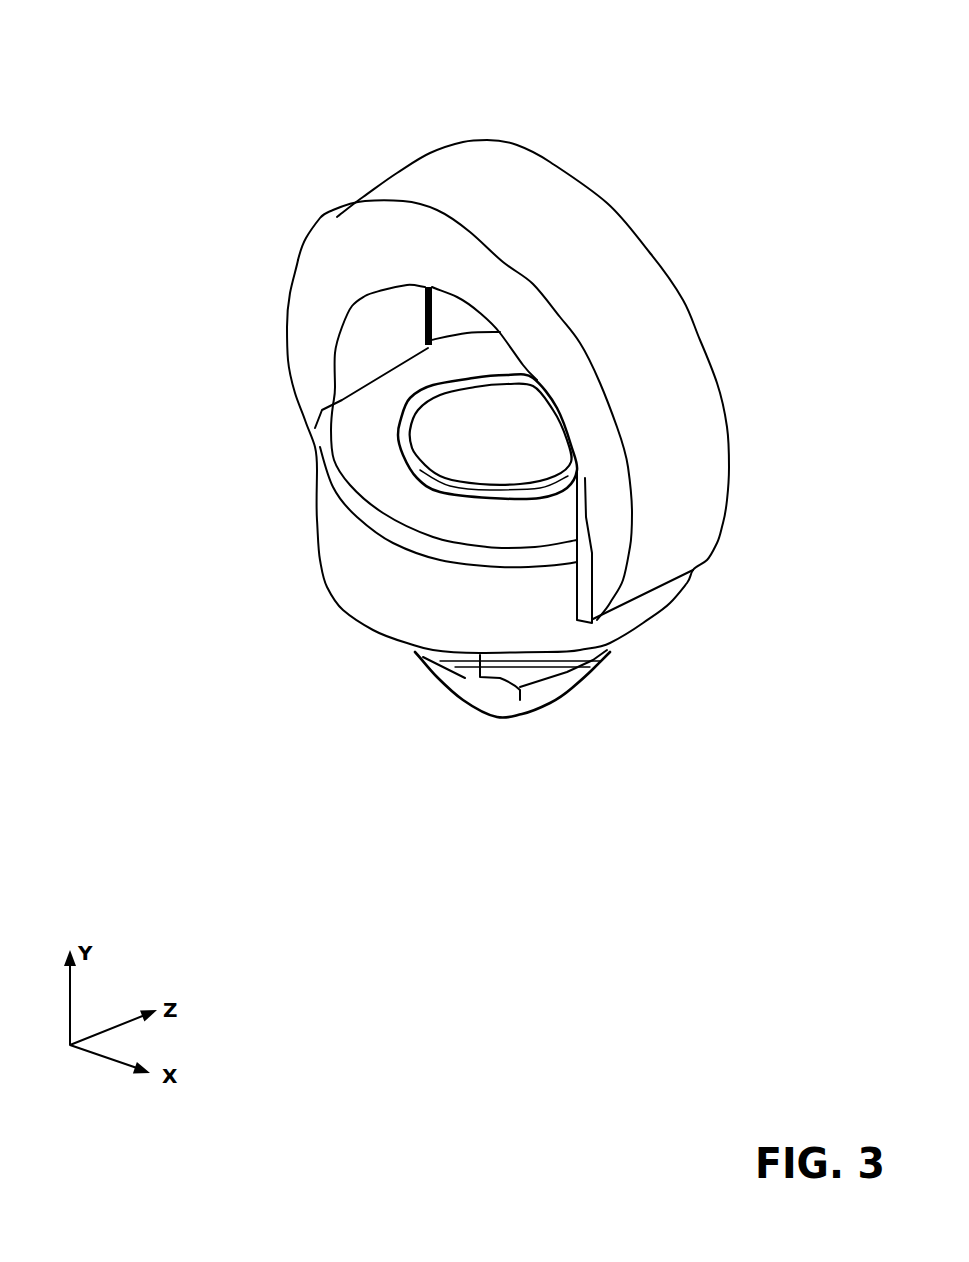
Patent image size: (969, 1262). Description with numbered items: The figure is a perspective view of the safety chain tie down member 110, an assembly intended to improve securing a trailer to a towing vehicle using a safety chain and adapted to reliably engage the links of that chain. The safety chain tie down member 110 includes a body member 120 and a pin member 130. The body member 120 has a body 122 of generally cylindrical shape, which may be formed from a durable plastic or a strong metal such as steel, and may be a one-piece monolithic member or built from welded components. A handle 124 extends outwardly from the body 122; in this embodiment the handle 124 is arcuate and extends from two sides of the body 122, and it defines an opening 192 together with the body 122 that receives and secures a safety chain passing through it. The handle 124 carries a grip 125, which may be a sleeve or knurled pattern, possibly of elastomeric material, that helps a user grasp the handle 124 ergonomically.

The safety chain tie down member 110 is at (140, 62).
The body member 120 is at (630, 117).
The body 122 is at (360, 573).
The handle 124 is at (417, 173).
The grip 125 is at (590, 247).
The pin member 130 is at (620, 723).
The opening 192 is at (410, 324).